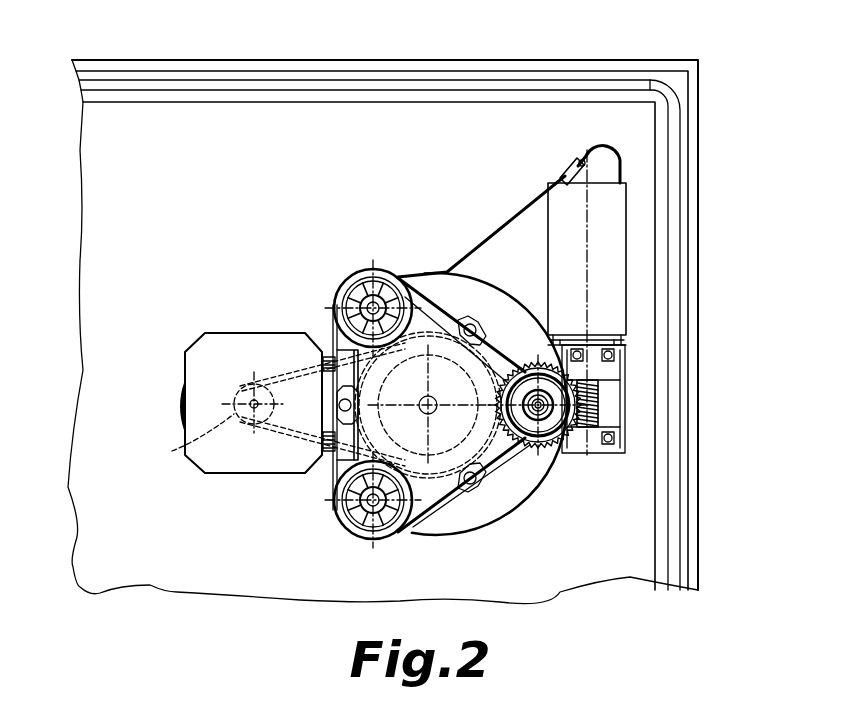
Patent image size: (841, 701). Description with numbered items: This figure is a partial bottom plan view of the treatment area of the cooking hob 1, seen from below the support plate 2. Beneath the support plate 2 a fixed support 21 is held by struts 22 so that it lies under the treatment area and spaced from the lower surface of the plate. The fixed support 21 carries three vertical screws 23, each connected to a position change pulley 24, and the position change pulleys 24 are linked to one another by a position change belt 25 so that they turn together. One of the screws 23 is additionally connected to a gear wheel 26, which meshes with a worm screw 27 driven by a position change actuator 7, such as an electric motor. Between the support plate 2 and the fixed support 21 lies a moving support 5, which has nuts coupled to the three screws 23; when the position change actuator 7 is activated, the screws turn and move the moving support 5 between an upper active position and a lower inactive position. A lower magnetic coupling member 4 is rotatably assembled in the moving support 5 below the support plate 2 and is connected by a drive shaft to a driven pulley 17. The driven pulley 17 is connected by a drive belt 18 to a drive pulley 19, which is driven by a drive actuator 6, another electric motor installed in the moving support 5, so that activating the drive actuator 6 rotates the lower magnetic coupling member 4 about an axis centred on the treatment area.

The cooking hob 1 is at (243, 48).
The support plate 2 is at (358, 128).
The lower magnetic coupling member 4 is at (505, 452).
The moving support 5 is at (483, 512).
The drive actuator 6 is at (187, 368).
The position change actuator 7 is at (618, 230).
The driven pulley 17 is at (436, 335).
The drive belt 18 is at (290, 372).
The drive pulley 19 is at (172, 451).
The fixed support 21 is at (318, 444).
The struts 22 is at (478, 312).
The vertical screws 23 is at (368, 272).
The position change pulleys 24 is at (340, 297).
The position change belt 25 is at (457, 505).
The gear wheel 26 is at (600, 368).
The worm screw 27 is at (600, 402).